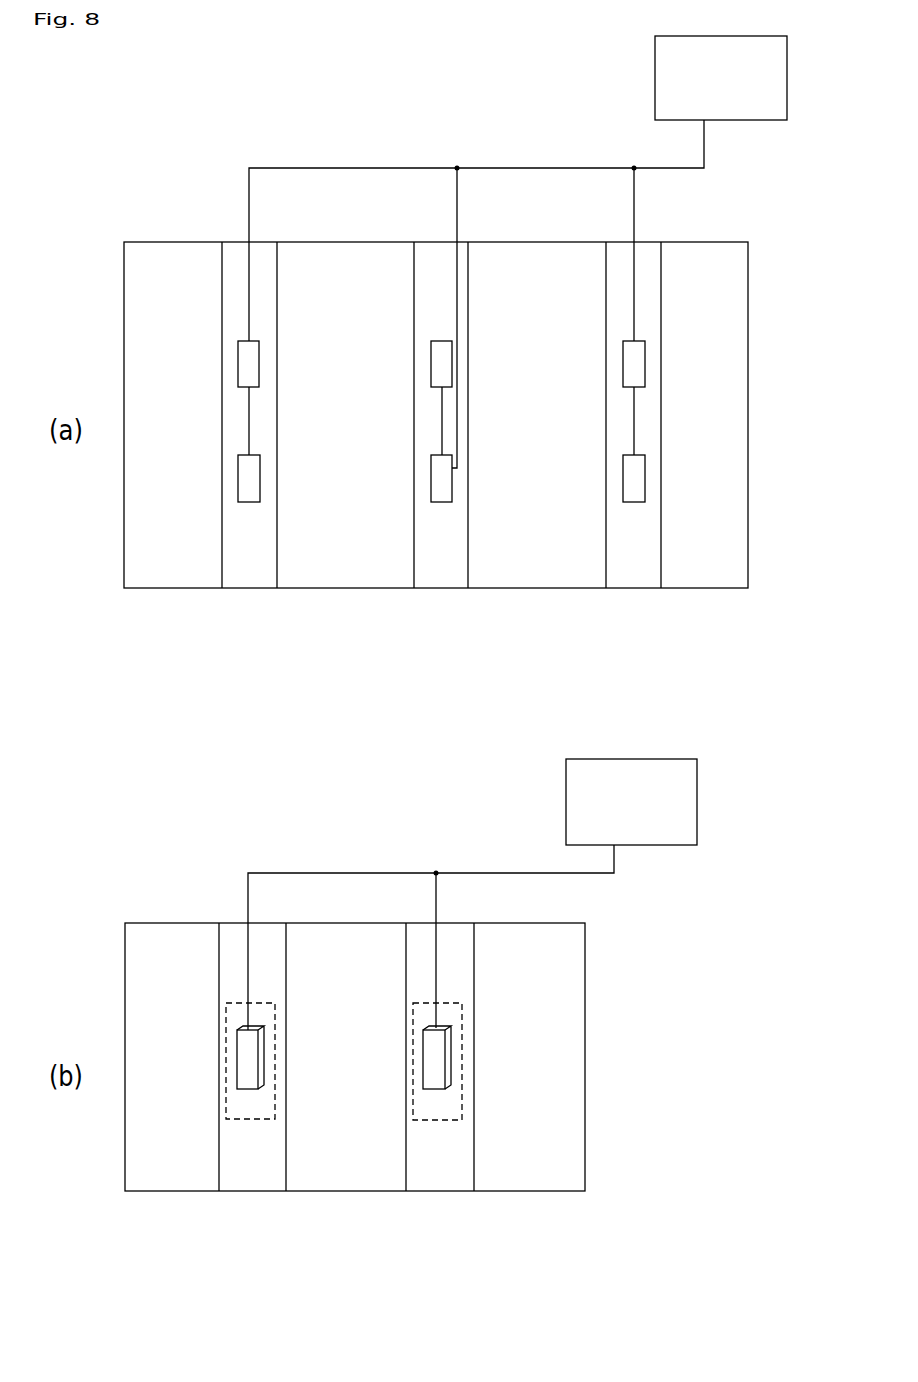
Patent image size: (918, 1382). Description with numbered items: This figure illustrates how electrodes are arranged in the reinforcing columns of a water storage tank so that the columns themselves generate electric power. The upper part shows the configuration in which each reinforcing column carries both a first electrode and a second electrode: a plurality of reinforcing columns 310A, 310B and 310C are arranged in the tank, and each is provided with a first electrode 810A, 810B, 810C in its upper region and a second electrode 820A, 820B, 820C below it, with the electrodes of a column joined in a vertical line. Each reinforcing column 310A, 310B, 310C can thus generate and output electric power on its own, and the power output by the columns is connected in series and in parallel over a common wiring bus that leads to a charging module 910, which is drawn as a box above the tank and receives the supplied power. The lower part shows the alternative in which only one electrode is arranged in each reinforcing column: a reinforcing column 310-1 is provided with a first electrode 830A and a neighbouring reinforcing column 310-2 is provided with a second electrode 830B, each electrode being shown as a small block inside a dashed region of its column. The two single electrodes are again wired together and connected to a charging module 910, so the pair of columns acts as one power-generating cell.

The charging module 910 is at (655, 78).
The reinforcing column 310A is at (277, 557).
The reinforcing column 310B is at (468, 557).
The reinforcing column 310C is at (661, 557).
The first electrode 810A is at (238, 364).
The first electrode 810B is at (431, 362).
The first electrode 810C is at (623, 362).
The second electrode 820A is at (238, 483).
The second electrode 820B is at (431, 482).
The second electrode 820C is at (623, 482).
The first electrode 830A is at (237, 1059).
The second electrode 830B is at (423, 1070).
The reinforcing column 310-1 is at (286, 1164).
The reinforcing column 310-2 is at (474, 1164).